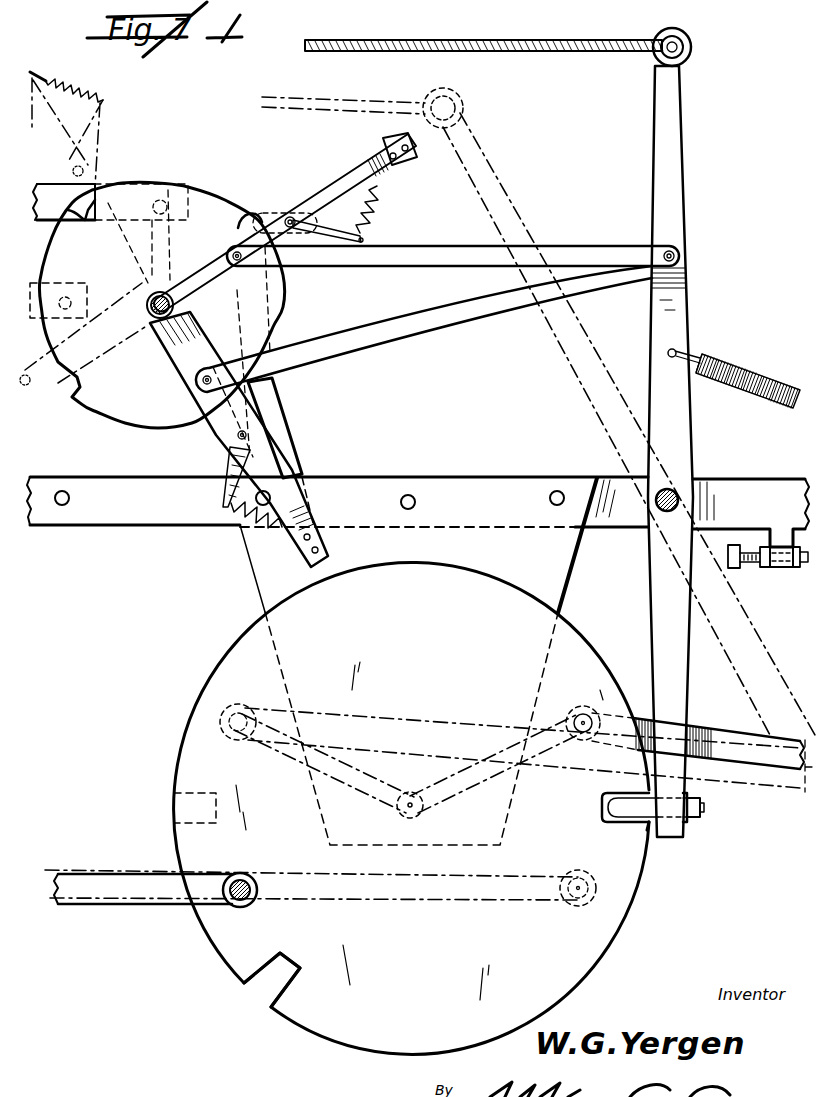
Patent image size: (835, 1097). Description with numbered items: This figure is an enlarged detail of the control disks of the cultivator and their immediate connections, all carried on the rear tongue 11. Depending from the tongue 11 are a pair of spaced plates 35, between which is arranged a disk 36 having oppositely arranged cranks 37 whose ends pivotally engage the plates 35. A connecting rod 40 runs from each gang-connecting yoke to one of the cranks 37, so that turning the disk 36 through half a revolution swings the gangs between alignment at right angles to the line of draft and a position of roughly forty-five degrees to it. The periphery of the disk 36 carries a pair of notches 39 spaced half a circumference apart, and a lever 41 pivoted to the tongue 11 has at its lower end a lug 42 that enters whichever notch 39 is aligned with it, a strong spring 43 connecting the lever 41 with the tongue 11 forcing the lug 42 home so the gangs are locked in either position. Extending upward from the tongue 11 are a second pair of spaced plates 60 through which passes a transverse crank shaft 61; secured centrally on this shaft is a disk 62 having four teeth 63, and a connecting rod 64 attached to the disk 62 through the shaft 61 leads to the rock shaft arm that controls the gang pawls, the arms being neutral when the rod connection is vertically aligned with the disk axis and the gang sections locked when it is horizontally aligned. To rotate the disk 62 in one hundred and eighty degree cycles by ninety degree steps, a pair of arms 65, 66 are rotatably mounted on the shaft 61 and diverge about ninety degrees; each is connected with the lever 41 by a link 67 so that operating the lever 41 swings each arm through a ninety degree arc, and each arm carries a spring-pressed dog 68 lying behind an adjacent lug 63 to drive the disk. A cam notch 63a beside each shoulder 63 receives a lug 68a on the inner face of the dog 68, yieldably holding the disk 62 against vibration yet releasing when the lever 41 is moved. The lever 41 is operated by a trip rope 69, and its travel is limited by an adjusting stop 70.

The rear tongue 11 is at (185, 515).
The spaced plates 35 is at (263, 565).
The disk 36 is at (187, 757).
The cranks 37 is at (487, 757).
The notches 39 is at (257, 980).
The connecting rod 40 is at (773, 757).
The lever 41 is at (668, 187).
The lug 42 is at (623, 807).
The spring 43 is at (763, 374).
The spaced plates 60 is at (273, 423).
The crank shaft 61 is at (148, 340).
The disk 62 is at (272, 307).
The teeth 63 is at (82, 206).
The cam notch 63a is at (110, 232).
The connecting rod 64 is at (43, 185).
The arm 65 is at (368, 165).
The arm 66 is at (257, 460).
The link 67 is at (433, 318).
The spring-pressed dog 68 is at (263, 216).
The lug 68a is at (238, 226).
The trip rope 69 is at (506, 44).
The adjusting stop 70 is at (782, 566).